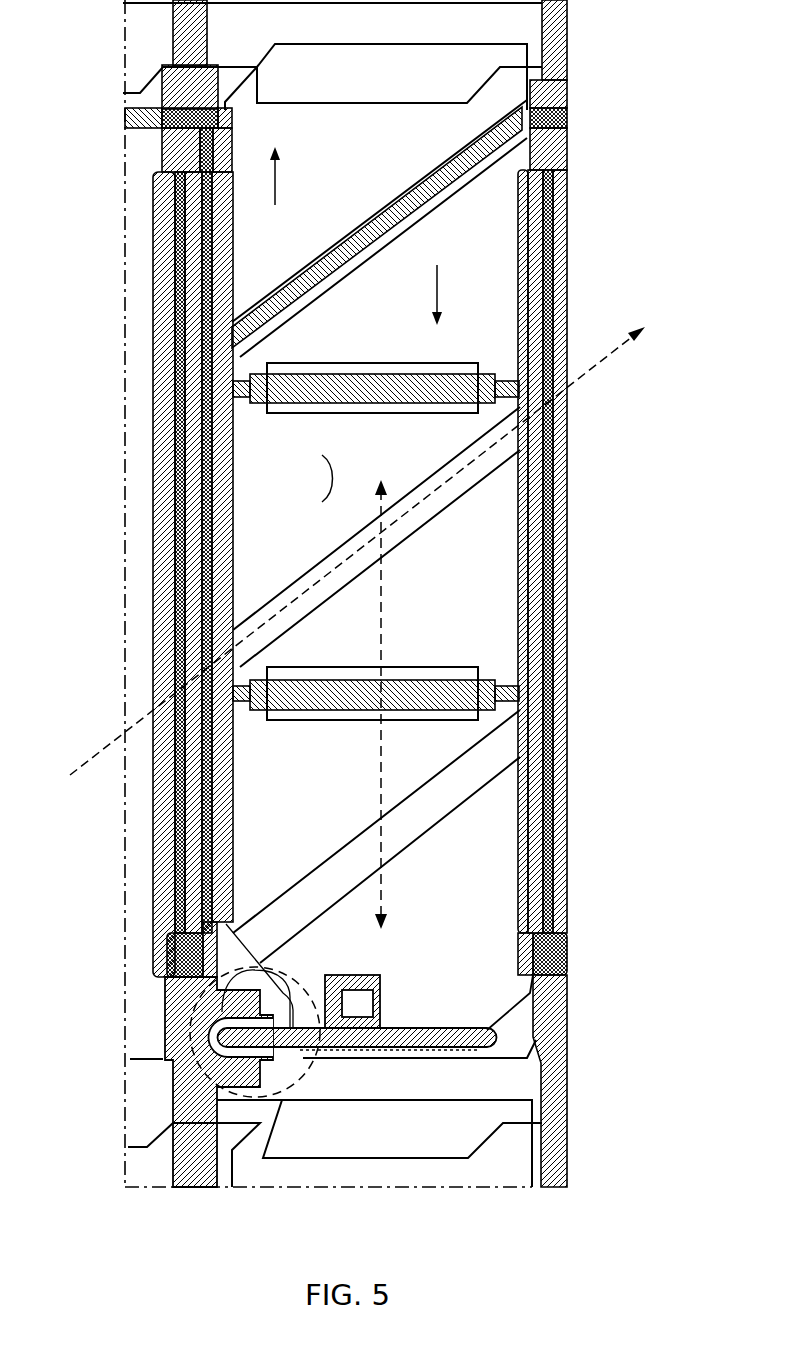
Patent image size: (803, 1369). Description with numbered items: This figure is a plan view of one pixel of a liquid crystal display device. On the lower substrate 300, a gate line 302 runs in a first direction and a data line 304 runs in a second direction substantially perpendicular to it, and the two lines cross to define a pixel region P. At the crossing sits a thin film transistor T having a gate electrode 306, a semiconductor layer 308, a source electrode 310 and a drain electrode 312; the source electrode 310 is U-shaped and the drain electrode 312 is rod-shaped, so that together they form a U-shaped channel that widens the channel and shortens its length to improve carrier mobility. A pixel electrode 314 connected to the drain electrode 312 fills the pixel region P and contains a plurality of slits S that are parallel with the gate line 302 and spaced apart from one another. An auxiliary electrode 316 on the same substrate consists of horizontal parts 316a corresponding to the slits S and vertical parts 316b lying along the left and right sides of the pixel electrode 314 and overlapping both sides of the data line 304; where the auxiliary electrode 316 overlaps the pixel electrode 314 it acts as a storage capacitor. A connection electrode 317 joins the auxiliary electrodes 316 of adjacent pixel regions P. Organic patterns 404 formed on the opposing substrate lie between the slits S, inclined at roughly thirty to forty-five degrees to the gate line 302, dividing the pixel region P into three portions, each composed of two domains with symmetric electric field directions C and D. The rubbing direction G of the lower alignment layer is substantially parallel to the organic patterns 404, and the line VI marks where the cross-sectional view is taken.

The lower substrate 300 is at (569, 625).
The gate line 302 is at (458, 1156).
The data line 304 is at (175, 452).
The gate electrode 306 is at (215, 992).
The semiconductor layer 308 is at (263, 996).
The source electrode 310 is at (249, 1083).
The drain electrode 312 is at (300, 1012).
The pixel electrode 314 is at (153, 386).
The auxiliary electrode 316 is at (347, 478).
The horizontal parts 316a is at (290, 413).
The vertical parts 316b is at (233, 504).
The connection electrode 317 is at (376, 250).
The organic patterns 404 is at (465, 190).
The direction of electric field C is at (275, 175).
The direction of electric field D is at (437, 297).
The rubbing direction G is at (368, 543).
The pixel region P is at (558, 513).
The slits S is at (443, 414).
The thin film transistor T is at (205, 1020).
The section line VI- VI is at (394, 711).